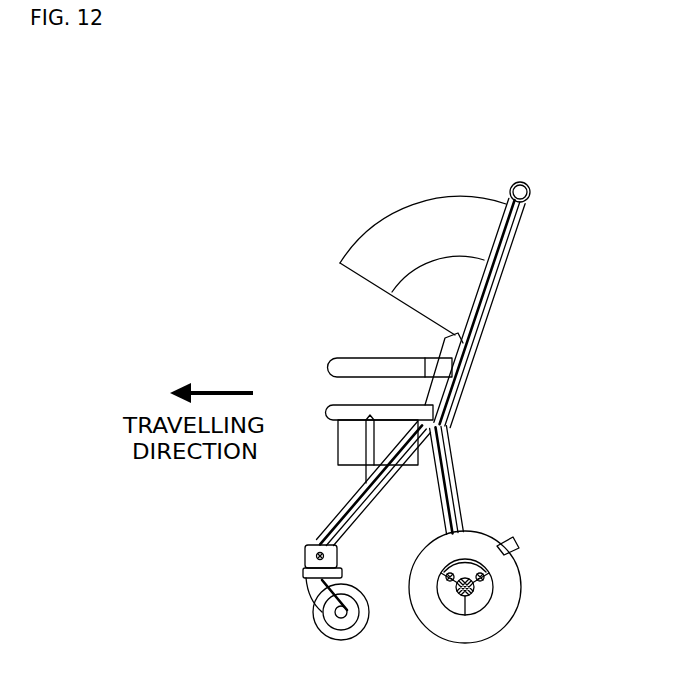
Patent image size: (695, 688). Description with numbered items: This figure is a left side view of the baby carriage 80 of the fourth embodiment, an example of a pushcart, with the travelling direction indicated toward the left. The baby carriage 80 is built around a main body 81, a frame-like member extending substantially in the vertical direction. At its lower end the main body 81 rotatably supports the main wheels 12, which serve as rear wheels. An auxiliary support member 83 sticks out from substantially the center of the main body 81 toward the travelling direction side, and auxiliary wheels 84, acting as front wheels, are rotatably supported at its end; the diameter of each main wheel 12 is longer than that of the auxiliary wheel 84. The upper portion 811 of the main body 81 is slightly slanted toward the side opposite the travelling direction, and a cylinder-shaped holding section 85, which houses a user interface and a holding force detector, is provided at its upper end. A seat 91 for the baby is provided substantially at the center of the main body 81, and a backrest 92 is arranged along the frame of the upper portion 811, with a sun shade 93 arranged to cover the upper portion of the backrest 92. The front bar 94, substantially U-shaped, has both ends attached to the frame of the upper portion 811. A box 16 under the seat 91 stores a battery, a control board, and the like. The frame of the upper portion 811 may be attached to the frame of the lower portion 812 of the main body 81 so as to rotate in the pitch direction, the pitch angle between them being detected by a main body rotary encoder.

The baby carriage 80 is at (569, 148).
The holding section 85 is at (531, 191).
The main body 81 is at (511, 366).
The upper portion of the main body 811 is at (487, 301).
The lower portion of the main body 812 is at (456, 482).
The sun shade 93 is at (382, 227).
The backrest 92 is at (447, 347).
The front bar 94 is at (332, 368).
The seat 91 is at (330, 410).
The box 16 is at (350, 440).
The auxiliary support member 83 is at (340, 518).
The auxiliary wheel 84 is at (318, 613).
The main wheel 12 is at (505, 587).